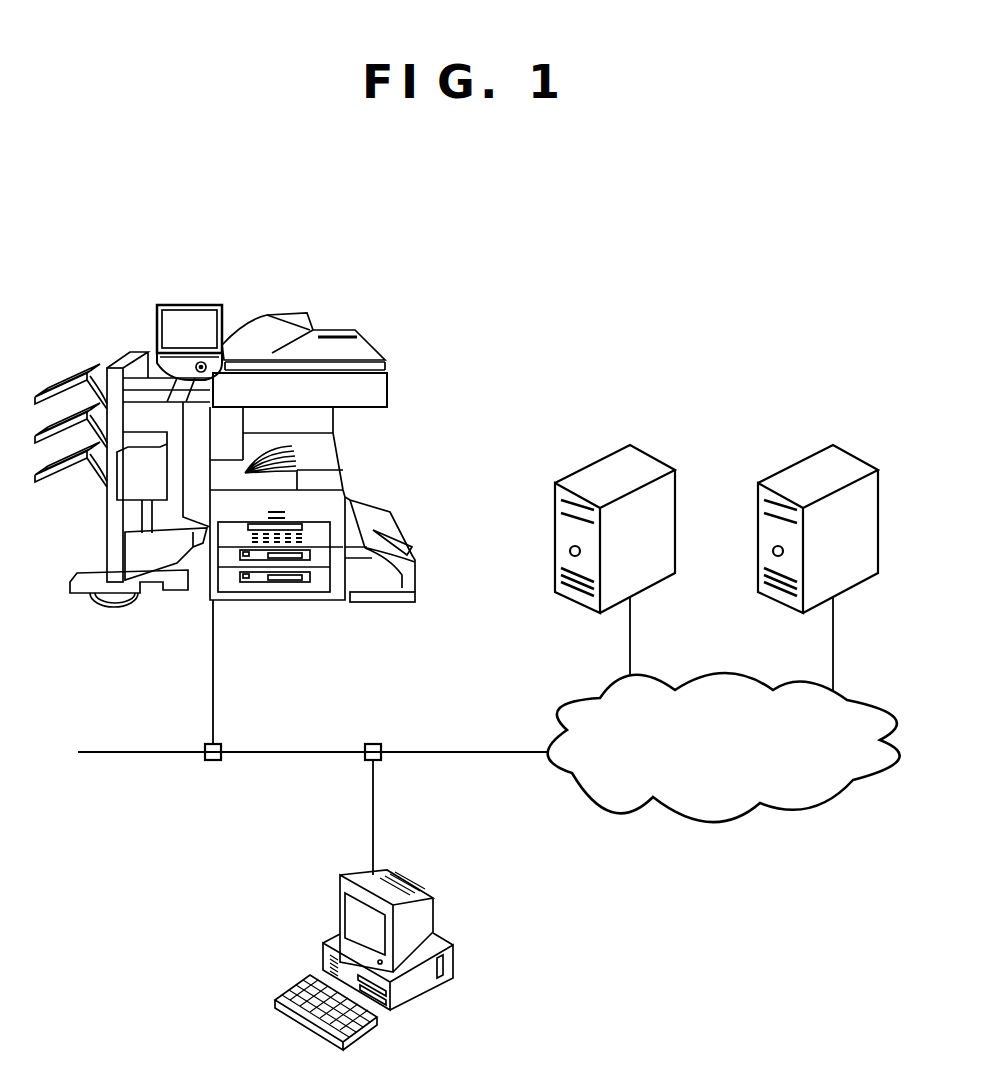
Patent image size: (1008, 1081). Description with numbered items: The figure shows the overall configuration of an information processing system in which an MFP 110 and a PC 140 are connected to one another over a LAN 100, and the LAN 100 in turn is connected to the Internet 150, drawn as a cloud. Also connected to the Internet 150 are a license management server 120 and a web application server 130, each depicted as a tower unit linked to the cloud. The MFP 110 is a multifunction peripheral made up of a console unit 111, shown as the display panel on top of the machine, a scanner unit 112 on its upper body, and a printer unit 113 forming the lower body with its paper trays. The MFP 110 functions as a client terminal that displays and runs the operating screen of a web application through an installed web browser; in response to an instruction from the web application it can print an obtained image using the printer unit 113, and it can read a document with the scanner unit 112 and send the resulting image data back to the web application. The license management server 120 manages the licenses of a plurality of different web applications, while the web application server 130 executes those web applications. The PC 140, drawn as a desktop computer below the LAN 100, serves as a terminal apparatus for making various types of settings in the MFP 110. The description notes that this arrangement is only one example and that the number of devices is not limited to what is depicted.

The LAN 100 is at (286, 750).
The MFP 110 is at (269, 290).
The console unit 111 is at (187, 312).
The scanner unit 112 is at (347, 331).
The printer unit 113 is at (331, 447).
The license management server 120 is at (640, 452).
The web application server 130 is at (843, 452).
The PC 140 is at (453, 957).
The Internet 150 is at (887, 706).